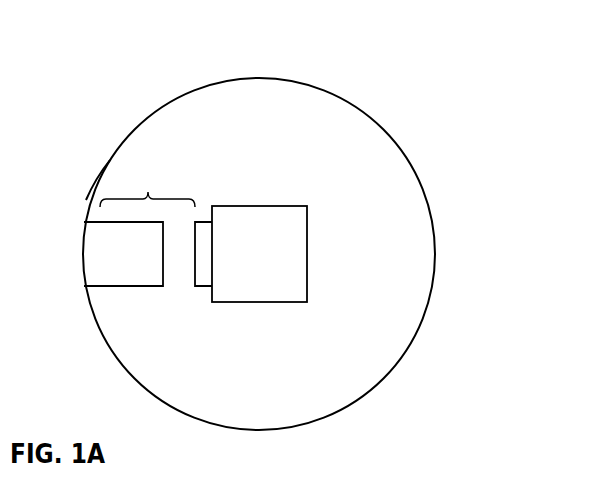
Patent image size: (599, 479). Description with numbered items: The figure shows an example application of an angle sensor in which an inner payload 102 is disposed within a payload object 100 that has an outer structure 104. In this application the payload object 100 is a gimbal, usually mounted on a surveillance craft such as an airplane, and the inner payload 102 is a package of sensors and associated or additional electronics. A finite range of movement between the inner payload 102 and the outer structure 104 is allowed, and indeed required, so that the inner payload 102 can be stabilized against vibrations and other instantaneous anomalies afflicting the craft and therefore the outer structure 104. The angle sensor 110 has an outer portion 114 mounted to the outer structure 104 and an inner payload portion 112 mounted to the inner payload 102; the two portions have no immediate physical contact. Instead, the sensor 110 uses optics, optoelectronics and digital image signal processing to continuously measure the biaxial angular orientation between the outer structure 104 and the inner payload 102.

The payload object 100 is at (286, 48).
The inner payload 102 is at (259, 254).
The outer structure 104 is at (102, 173).
The angle sensor 110 is at (147, 189).
The inner payload portion 112 is at (195, 287).
The outer portion 114 is at (115, 287).